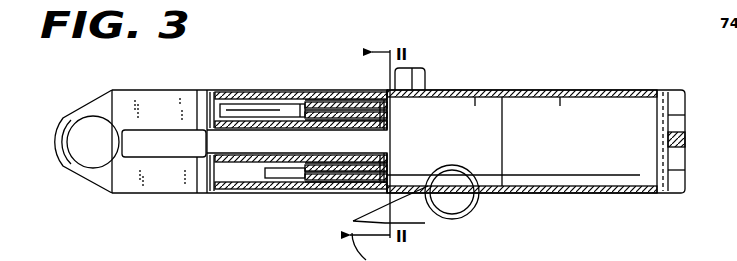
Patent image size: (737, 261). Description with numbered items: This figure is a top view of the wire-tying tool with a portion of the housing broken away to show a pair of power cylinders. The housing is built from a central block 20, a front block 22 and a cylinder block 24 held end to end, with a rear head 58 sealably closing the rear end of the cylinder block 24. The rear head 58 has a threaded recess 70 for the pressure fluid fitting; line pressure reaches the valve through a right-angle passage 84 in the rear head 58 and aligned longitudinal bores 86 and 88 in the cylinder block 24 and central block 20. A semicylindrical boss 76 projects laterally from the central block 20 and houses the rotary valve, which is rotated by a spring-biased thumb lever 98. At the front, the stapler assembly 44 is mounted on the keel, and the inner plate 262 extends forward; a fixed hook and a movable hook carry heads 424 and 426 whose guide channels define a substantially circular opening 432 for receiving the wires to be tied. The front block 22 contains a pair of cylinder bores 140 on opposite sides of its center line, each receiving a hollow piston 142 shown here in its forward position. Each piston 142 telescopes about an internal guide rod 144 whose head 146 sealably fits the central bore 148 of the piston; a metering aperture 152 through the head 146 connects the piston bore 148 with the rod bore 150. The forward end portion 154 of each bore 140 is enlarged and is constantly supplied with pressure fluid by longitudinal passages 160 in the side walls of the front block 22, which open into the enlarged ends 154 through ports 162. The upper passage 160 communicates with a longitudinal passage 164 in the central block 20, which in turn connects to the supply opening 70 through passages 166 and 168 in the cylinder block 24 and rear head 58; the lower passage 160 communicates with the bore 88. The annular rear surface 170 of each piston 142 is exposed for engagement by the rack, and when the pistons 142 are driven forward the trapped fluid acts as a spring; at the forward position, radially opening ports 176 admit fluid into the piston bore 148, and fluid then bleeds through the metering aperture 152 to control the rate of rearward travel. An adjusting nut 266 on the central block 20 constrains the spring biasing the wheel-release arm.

The central block 20 is at (475, 96).
The front block 22 is at (376, 96).
The cylinder block 24 is at (560, 96).
The stapler assembly 44 is at (172, 132).
The rear head 58 is at (683, 92).
The threaded recess 70 is at (686, 139).
The semicylindrical boss 76 is at (466, 218).
The right-angle passage 84 is at (676, 170).
The longitudinal bore 86 is at (636, 194).
The longitudinal bore 88 is at (495, 196).
The thumb lever 98 is at (353, 225).
The cylinder bore 140 is at (216, 129).
The hollow piston 142 is at (266, 92).
The internal guide rod 144 is at (386, 114).
The head 146 is at (335, 96).
The central bore 148 is at (303, 92).
The rod bore 150 is at (386, 126).
The metering aperture 152 is at (308, 96).
The forward end portion 154 is at (197, 92).
The longitudinal passage 160 is at (240, 92).
The port 162 is at (209, 94).
The longitudinal passage 164 is at (506, 92).
The passage 166 is at (616, 94).
The passage 168 is at (680, 117).
The annular rear surface 170 is at (305, 129).
The radially opening ports 176 is at (222, 172).
The inner plate 262 is at (152, 193).
The adjusting nut 266 is at (420, 70).
The head 424 is at (62, 122).
The head 426 is at (72, 166).
The circular opening 432 is at (72, 150).